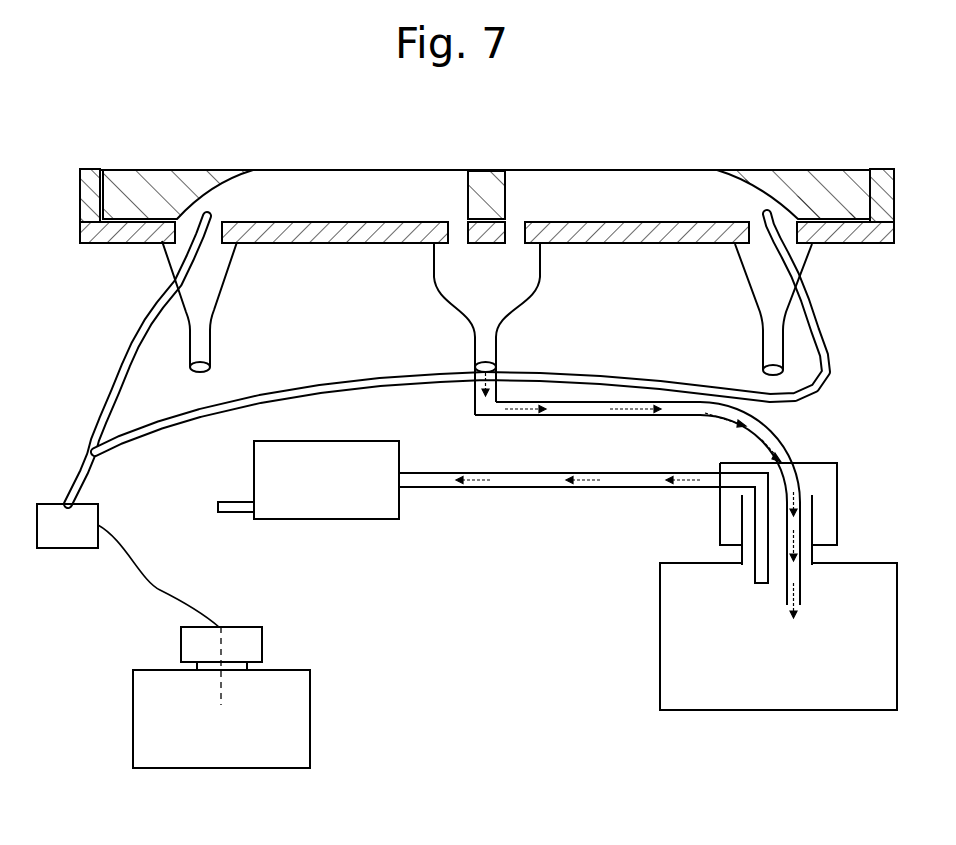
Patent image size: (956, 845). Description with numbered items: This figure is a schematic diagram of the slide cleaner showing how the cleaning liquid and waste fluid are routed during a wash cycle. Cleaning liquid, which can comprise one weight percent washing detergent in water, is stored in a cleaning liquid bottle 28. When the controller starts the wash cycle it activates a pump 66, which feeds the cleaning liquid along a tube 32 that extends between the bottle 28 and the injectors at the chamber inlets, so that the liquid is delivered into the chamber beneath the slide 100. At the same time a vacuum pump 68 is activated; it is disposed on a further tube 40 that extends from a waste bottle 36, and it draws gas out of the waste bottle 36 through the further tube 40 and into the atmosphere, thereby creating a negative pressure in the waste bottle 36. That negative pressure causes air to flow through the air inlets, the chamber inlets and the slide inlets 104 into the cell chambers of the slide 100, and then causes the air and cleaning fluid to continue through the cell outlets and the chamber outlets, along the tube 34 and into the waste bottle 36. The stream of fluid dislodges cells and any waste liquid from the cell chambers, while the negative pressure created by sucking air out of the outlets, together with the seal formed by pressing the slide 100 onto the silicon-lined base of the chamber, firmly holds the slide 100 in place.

The slide 100 is at (365, 170).
The slide inlets 104 is at (222, 210).
The cleaning liquid bottle 28 is at (133, 708).
The tube 32 is at (150, 583).
The tube 34 is at (783, 442).
The waste bottle 36 is at (660, 640).
The further tube 40 is at (592, 492).
The pump 66 is at (47, 504).
The vacuum pump 68 is at (353, 520).